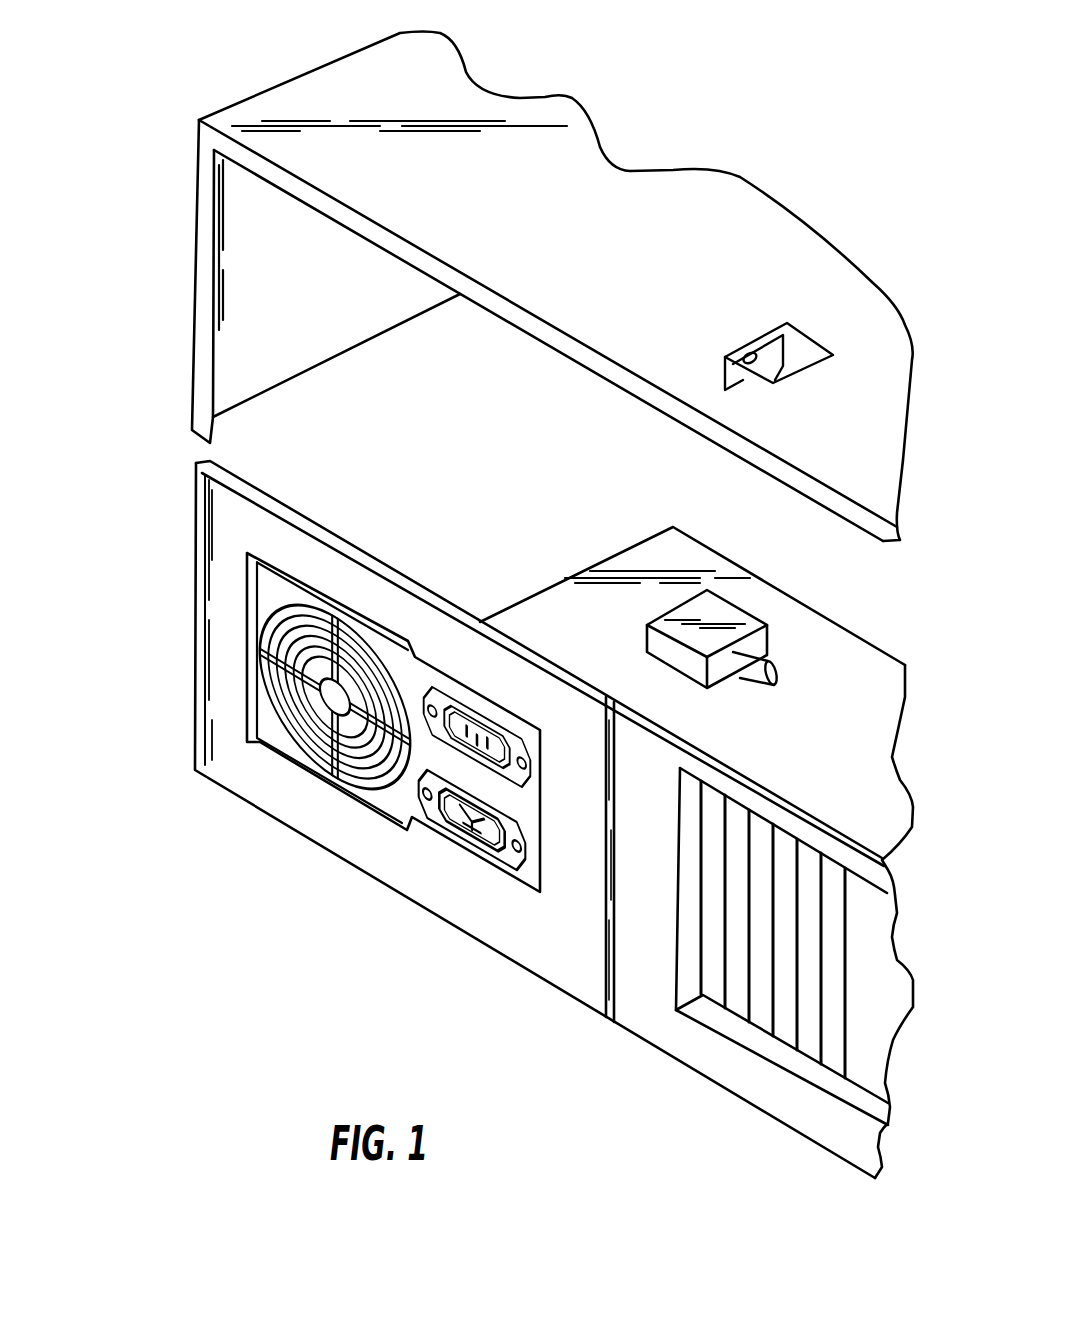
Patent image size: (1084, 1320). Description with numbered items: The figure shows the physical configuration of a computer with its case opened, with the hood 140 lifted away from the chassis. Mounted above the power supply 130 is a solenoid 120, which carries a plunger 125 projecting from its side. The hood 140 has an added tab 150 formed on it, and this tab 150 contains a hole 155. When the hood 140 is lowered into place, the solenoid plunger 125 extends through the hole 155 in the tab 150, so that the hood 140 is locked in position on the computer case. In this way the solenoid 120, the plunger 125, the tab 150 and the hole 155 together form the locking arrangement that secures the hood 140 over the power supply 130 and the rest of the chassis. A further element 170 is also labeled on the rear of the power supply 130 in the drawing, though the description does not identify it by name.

The hood 140 is at (255, 110).
The hole 155 is at (752, 353).
The tab 150 is at (737, 378).
The power supply 130 is at (628, 560).
The solenoid 120 is at (697, 612).
The plunger 125 is at (778, 680).
The power inlet connector 170 is at (463, 848).